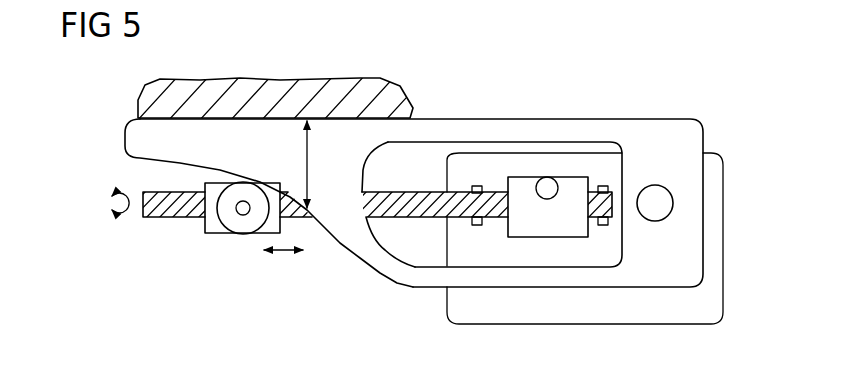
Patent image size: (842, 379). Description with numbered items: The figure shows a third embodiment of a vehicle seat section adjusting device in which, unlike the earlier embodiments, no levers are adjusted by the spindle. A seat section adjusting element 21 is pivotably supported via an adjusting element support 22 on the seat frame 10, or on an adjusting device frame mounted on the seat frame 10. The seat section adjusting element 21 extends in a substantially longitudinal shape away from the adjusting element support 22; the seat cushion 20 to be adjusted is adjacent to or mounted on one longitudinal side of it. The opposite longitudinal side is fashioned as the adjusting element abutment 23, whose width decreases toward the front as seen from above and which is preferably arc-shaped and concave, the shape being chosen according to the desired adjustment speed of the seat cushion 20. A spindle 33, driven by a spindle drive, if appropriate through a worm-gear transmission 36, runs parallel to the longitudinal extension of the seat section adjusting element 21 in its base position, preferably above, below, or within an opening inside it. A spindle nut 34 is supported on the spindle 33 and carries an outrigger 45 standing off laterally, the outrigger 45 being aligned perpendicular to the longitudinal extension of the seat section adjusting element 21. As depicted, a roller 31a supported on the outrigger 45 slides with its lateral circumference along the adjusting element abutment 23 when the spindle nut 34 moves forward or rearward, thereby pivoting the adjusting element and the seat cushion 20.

The seat frame 10 is at (600, 171).
The seat cushion 20 is at (300, 93).
The seat section adjusting element 21 is at (482, 119).
The adjusting element support 22 is at (653, 185).
The adjusting element abutment 23 is at (260, 198).
The roller 31a is at (292, 307).
The spindle 33 is at (151, 217).
The spindle nut 34 is at (231, 281).
The worm-gear transmission 36 is at (573, 190).
The outrigger 45 is at (243, 215).